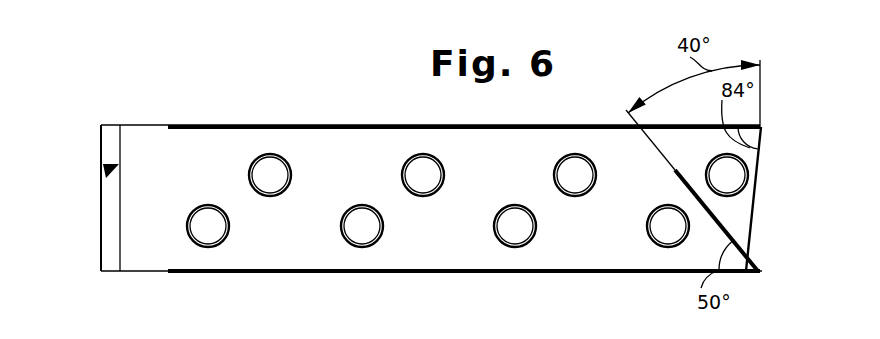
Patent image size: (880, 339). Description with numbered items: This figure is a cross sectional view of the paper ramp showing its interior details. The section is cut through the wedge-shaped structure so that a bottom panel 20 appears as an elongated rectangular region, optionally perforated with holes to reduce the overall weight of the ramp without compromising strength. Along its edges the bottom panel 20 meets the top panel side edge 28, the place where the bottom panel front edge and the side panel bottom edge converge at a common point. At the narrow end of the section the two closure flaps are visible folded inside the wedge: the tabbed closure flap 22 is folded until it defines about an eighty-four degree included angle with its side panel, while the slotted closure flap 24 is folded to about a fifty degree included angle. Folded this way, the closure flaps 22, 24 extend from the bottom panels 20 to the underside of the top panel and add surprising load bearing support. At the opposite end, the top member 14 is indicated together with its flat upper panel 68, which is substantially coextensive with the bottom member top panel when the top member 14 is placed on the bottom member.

The top member 14 is at (103, 168).
The bottom panel 20 is at (475, 212).
The tabbed closure flap 22 is at (753, 200).
The slotted closure flap 24 is at (690, 192).
The top panel side edge 28 is at (385, 124).
The upper panel 68 is at (108, 210).